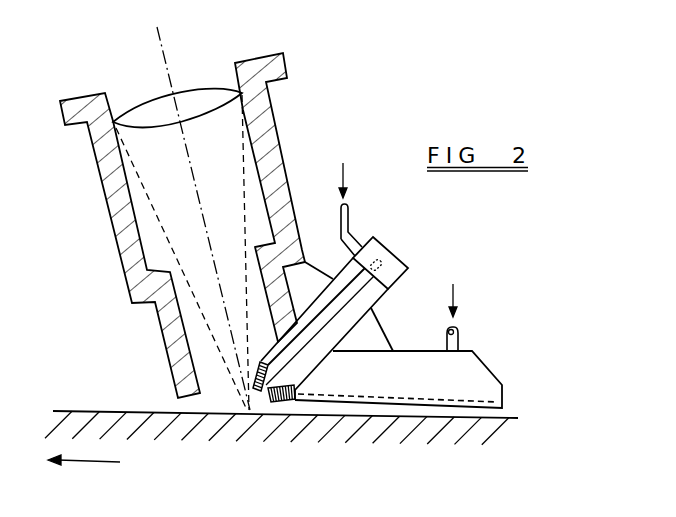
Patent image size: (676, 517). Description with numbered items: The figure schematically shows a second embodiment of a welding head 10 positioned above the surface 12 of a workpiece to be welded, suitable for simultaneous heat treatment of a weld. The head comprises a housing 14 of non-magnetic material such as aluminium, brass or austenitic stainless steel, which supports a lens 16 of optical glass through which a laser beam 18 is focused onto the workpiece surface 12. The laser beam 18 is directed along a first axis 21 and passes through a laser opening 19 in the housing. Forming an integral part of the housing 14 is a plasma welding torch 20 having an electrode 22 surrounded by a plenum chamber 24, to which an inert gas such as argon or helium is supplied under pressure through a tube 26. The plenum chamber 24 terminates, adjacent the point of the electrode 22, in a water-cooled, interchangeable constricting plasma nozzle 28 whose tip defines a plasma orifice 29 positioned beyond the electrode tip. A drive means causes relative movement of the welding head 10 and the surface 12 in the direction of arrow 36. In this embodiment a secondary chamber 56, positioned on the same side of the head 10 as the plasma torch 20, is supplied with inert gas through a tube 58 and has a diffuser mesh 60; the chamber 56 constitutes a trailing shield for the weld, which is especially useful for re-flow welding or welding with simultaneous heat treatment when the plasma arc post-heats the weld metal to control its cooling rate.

The welding head 10 is at (310, 100).
The surface 12 is at (113, 411).
The housing 14 is at (262, 67).
The lens 16 is at (163, 108).
The laser beam 18 is at (249, 195).
The laser opening 19 is at (246, 337).
The plasma welding torch 20 is at (393, 262).
The first axis 21 is at (166, 58).
The electrode 22 is at (313, 338).
The plenum chamber 24 is at (337, 273).
The tube 26 is at (352, 224).
The constricting plasma nozzle 28 is at (256, 391).
The plasma orifice 29 is at (271, 402).
The arrow 36 is at (84, 472).
The secondary chamber 56 is at (474, 373).
The tube 58 is at (447, 340).
The diffuser mesh 60 is at (478, 400).